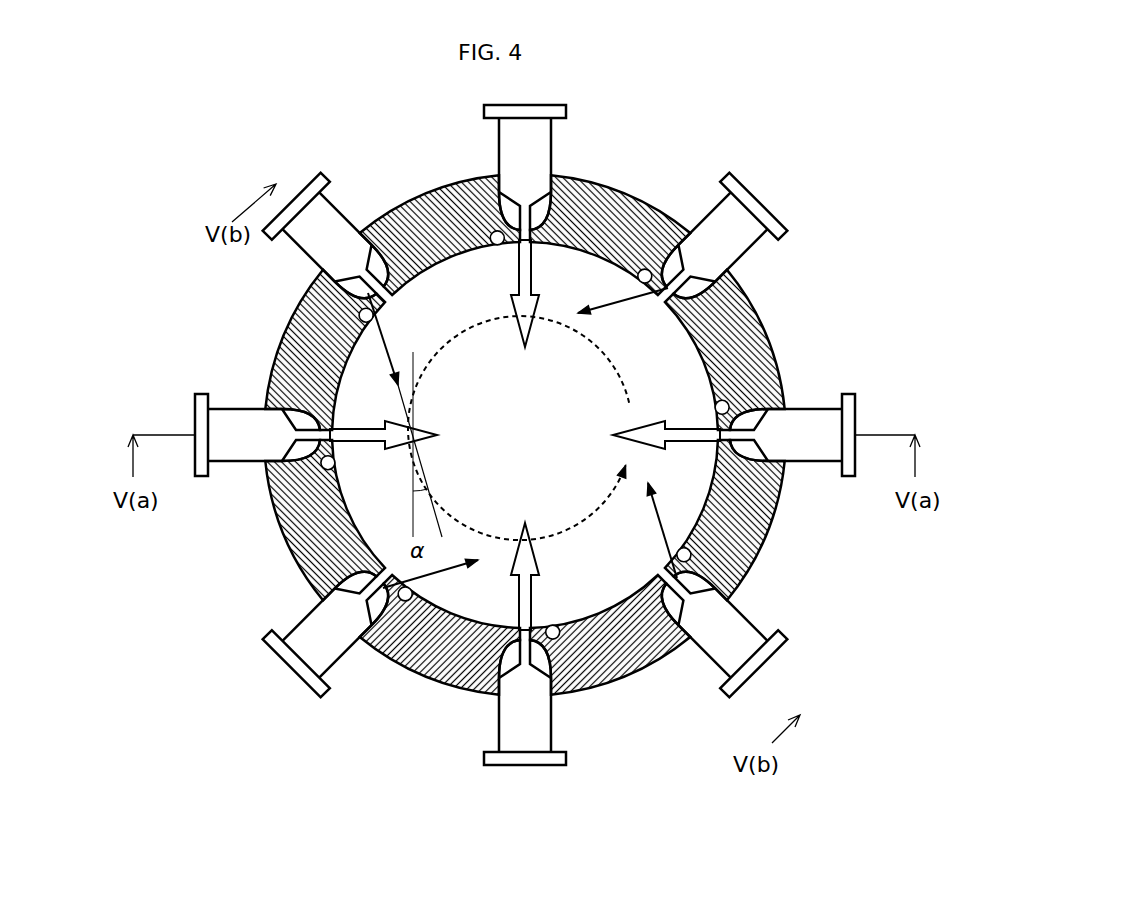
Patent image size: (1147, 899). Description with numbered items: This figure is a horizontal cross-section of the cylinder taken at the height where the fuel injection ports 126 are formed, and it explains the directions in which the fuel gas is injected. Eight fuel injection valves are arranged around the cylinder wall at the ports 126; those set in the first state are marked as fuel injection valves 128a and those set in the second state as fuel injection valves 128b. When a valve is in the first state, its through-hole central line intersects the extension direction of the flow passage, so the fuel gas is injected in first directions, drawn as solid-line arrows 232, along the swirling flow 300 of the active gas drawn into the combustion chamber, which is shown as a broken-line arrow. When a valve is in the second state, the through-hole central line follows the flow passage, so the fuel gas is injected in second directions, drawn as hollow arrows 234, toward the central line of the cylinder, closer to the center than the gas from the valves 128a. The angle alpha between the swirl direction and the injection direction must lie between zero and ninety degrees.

The fuel injection port 126 is at (495, 236).
The fuel injection valve in first state 128a is at (350, 289).
The fuel injection valve in second state 128b is at (548, 208).
The first directions 232 is at (383, 325).
The second directions 234 is at (705, 428).
The swirling flow 300 is at (453, 338).